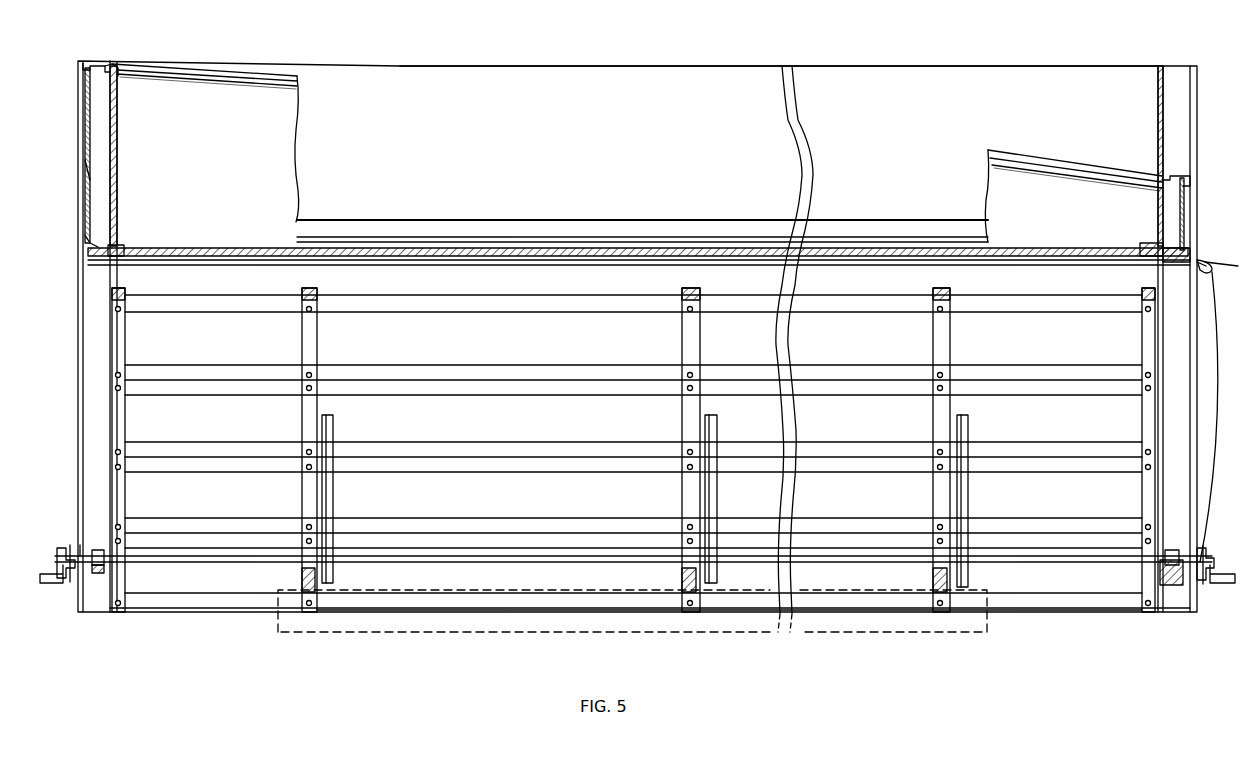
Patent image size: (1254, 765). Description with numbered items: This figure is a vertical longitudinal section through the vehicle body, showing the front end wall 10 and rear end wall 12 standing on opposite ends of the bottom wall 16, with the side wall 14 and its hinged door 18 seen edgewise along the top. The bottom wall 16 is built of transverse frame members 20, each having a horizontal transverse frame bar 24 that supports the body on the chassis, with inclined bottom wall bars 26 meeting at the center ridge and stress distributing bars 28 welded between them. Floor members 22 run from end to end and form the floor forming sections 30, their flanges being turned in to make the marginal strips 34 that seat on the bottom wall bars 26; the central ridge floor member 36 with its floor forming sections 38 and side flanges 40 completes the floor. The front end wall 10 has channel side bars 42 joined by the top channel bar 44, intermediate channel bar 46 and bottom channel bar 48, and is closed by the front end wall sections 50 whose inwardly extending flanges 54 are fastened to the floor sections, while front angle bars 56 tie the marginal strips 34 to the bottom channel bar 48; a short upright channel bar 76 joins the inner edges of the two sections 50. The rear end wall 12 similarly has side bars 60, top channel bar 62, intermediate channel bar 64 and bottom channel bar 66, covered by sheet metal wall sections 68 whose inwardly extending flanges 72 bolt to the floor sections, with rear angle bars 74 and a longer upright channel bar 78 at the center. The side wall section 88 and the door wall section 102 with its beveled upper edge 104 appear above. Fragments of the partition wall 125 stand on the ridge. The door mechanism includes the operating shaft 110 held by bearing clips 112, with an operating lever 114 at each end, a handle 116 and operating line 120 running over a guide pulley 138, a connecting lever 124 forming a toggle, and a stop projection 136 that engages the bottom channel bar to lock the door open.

The front end wall 10 is at (1172, 58).
The rear end wall 12 is at (104, 64).
The side wall 14 is at (764, 97).
The bottom wall 16 is at (861, 515).
The door 18 is at (323, 223).
The transverse frame member 20 is at (294, 620).
The floor member 22 is at (453, 505).
The transverse frame bar 24 is at (324, 592).
The bottom wall bar 26 is at (304, 341).
The stress distributing bar 28 is at (334, 430).
The floor forming section 30 is at (560, 432).
The marginal strip 34 is at (482, 385).
The central ridge floor member 36 is at (447, 241).
The floor forming section of ridge member 38 is at (537, 256).
The side flange of ridge member 40 is at (604, 270).
The side bar of front end wall 42 is at (1180, 95).
The top channel bar of front end wall 44 is at (1178, 178).
The intermediate channel bar of front end wall 46 is at (1186, 242).
The bottom channel bar of front end wall 48 is at (1170, 582).
The front end wall section 50 is at (1160, 114).
The inwardly extending flange 54 is at (1150, 235).
The front angle bar 56 is at (1144, 405).
The side bar of rear end wall 60 is at (88, 92).
The top channel bar of rear end wall 62 is at (114, 66).
The intermediate channel bar of rear end wall 64 is at (88, 232).
The bottom channel bar of rear end wall 66 is at (103, 568).
The sheet metal wall section 68 is at (117, 138).
The inwardly extending flange 72 is at (129, 244).
The rear angle bar 74 is at (120, 410).
The short upright channel bar 76 is at (1184, 205).
The short upright channel bar 78 is at (88, 168).
The side wall section 88 is at (939, 88).
The sheet metal wall section of door 102 is at (752, 234).
The beveled upper edge 104 is at (642, 200).
The operating shaft 110 is at (553, 562).
The bearing clip 112 is at (104, 560).
The operating lever 114 is at (58, 552).
The operating handle 116 is at (48, 585).
The operating line 120 is at (1215, 258).
The connecting lever 124 is at (70, 584).
The partition wall 125 is at (288, 132).
The stop projection 136 is at (1195, 560).
The guide pulley 138 is at (1210, 272).